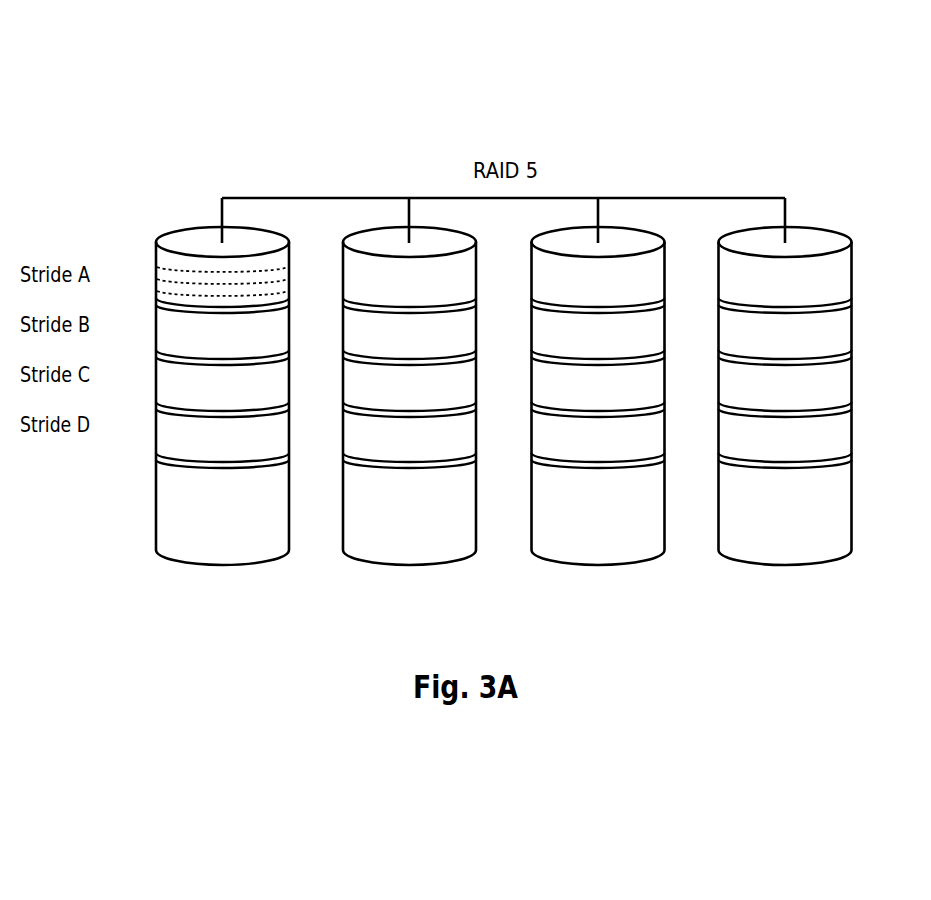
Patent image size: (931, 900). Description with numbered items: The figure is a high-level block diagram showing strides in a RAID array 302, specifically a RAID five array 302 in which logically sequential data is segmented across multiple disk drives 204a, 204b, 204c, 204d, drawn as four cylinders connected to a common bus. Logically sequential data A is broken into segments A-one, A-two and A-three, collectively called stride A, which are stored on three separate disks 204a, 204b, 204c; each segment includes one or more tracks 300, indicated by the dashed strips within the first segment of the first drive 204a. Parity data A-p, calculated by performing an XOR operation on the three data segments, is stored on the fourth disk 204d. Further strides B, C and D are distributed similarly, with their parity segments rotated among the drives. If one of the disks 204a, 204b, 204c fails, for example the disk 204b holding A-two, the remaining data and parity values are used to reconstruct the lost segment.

The RAID array 302 is at (221, 74).
The tracks 300 is at (157, 292).
The disk drive 204a is at (188, 240).
The disk drive 204b is at (384, 237).
The disk drive 204c is at (632, 238).
The disk drive 204d is at (820, 238).